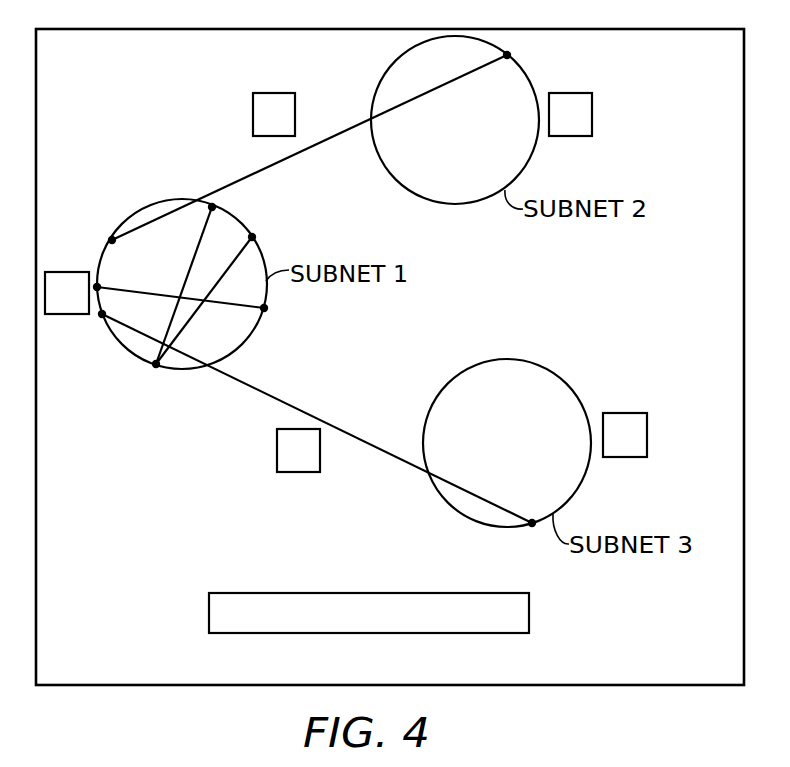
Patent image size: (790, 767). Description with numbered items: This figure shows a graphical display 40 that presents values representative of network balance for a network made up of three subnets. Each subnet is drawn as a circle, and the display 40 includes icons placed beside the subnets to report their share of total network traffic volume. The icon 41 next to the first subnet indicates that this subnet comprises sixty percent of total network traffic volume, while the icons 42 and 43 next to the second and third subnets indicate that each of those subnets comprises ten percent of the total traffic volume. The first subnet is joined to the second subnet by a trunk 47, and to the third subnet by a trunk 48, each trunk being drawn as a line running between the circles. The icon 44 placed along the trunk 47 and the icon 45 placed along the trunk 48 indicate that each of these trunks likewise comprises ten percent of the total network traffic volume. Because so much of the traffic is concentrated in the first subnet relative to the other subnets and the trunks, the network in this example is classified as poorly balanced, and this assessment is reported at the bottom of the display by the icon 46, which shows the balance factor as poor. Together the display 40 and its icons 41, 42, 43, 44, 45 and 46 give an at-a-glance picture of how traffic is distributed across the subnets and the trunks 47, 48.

The display 40 is at (698, 683).
The icon 41 is at (72, 272).
The icon 42 is at (592, 116).
The icon 43 is at (640, 413).
The icon 44 is at (253, 118).
The icon 45 is at (295, 472).
The icon 46 is at (530, 618).
The trunk 47 is at (267, 168).
The trunk 48 is at (342, 429).